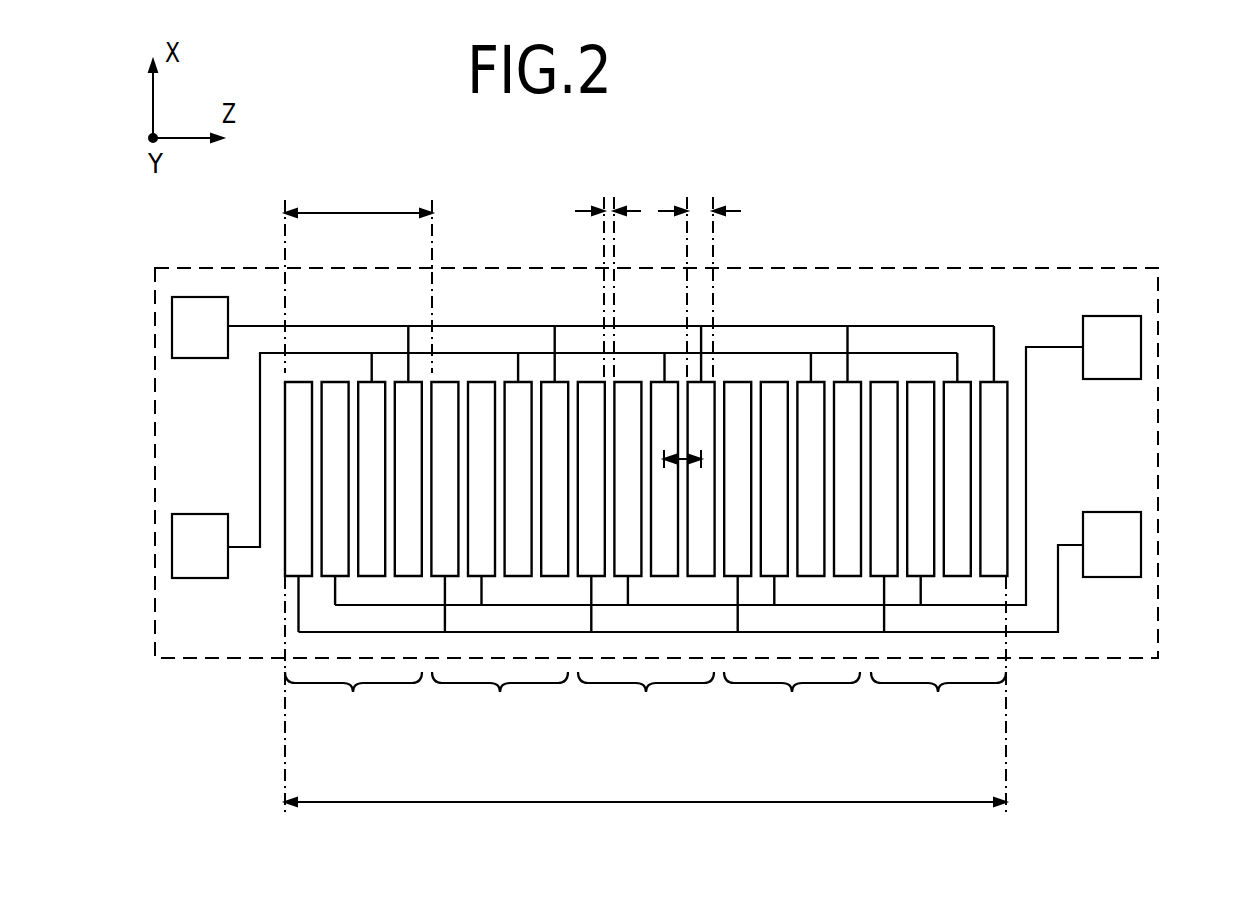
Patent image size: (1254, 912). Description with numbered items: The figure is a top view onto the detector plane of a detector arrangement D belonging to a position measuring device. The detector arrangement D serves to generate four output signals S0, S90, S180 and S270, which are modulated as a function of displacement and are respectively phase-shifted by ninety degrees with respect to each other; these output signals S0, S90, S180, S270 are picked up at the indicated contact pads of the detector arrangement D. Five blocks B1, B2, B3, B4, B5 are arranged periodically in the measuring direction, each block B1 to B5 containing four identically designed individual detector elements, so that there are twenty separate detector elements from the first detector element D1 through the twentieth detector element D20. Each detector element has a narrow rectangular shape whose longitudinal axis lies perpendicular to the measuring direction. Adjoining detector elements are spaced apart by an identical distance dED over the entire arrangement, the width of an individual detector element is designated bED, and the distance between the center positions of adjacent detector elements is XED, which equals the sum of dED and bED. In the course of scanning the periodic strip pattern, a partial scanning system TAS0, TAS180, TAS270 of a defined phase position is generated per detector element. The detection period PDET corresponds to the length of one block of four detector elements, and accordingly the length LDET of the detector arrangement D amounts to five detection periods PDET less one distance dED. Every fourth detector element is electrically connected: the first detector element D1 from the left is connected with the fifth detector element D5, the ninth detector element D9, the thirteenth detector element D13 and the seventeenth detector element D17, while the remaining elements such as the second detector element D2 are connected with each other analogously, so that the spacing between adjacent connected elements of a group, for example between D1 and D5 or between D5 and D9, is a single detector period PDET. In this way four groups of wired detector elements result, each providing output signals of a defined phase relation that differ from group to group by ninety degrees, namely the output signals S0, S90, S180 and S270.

The detector arrangement D is at (1097, 292).
The first detector element D1 is at (294, 557).
The second detector element D2 is at (334, 563).
The fifth detector element D5 is at (443, 555).
The ninth detector element D9 is at (585, 553).
The thirteenth detector element D13 is at (735, 553).
The seventeenth detector element D17 is at (878, 548).
The twentieth detector element D20 is at (1000, 390).
The first block B1 is at (353, 701).
The second block B2 is at (500, 701).
The third block B3 is at (646, 701).
The fourth block B4 is at (792, 701).
The fifth block B5 is at (938, 701).
The output signal S0 is at (768, 639).
The output signal S90 is at (1118, 348).
The output signal S180 is at (509, 389).
The output signal S270 is at (523, 269).
The partial scanning system TAS0 is at (392, 632).
The partial scanning system TAS180 is at (317, 352).
The partial scanning system TAS270 is at (511, 326).
The detection period PDET is at (358, 269).
The length of the detector arrangement LDET is at (645, 696).
The distance between adjoining detector elements dED is at (608, 266).
The width of the detector elements bED is at (699, 266).
The distance between center positions of adjacent detector elements XED is at (685, 457).